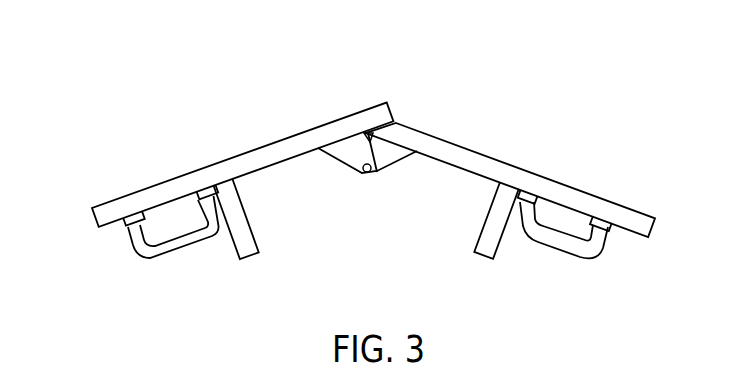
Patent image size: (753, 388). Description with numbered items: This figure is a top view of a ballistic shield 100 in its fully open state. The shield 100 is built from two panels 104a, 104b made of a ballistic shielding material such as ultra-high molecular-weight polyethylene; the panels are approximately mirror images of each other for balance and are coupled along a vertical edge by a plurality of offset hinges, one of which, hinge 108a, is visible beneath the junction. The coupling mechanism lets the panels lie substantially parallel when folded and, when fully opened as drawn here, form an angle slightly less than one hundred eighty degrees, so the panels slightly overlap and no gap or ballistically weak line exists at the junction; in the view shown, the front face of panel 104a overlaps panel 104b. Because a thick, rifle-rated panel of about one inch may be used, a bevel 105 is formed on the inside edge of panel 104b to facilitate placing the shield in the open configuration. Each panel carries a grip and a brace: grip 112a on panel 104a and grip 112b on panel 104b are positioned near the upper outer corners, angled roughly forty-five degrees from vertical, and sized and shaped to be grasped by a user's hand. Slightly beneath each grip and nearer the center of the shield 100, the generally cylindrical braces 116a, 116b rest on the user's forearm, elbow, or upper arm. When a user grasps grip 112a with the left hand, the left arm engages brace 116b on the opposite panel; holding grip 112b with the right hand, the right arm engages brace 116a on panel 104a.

The shield 100 is at (118, 83).
The panel 104a is at (350, 125).
The panel 104b is at (402, 133).
The bevel 105 is at (388, 120).
The offset hinge 108a is at (387, 153).
The grip 112a is at (605, 243).
The grip 112b is at (130, 242).
The brace 116a is at (497, 255).
The brace 116b is at (237, 256).